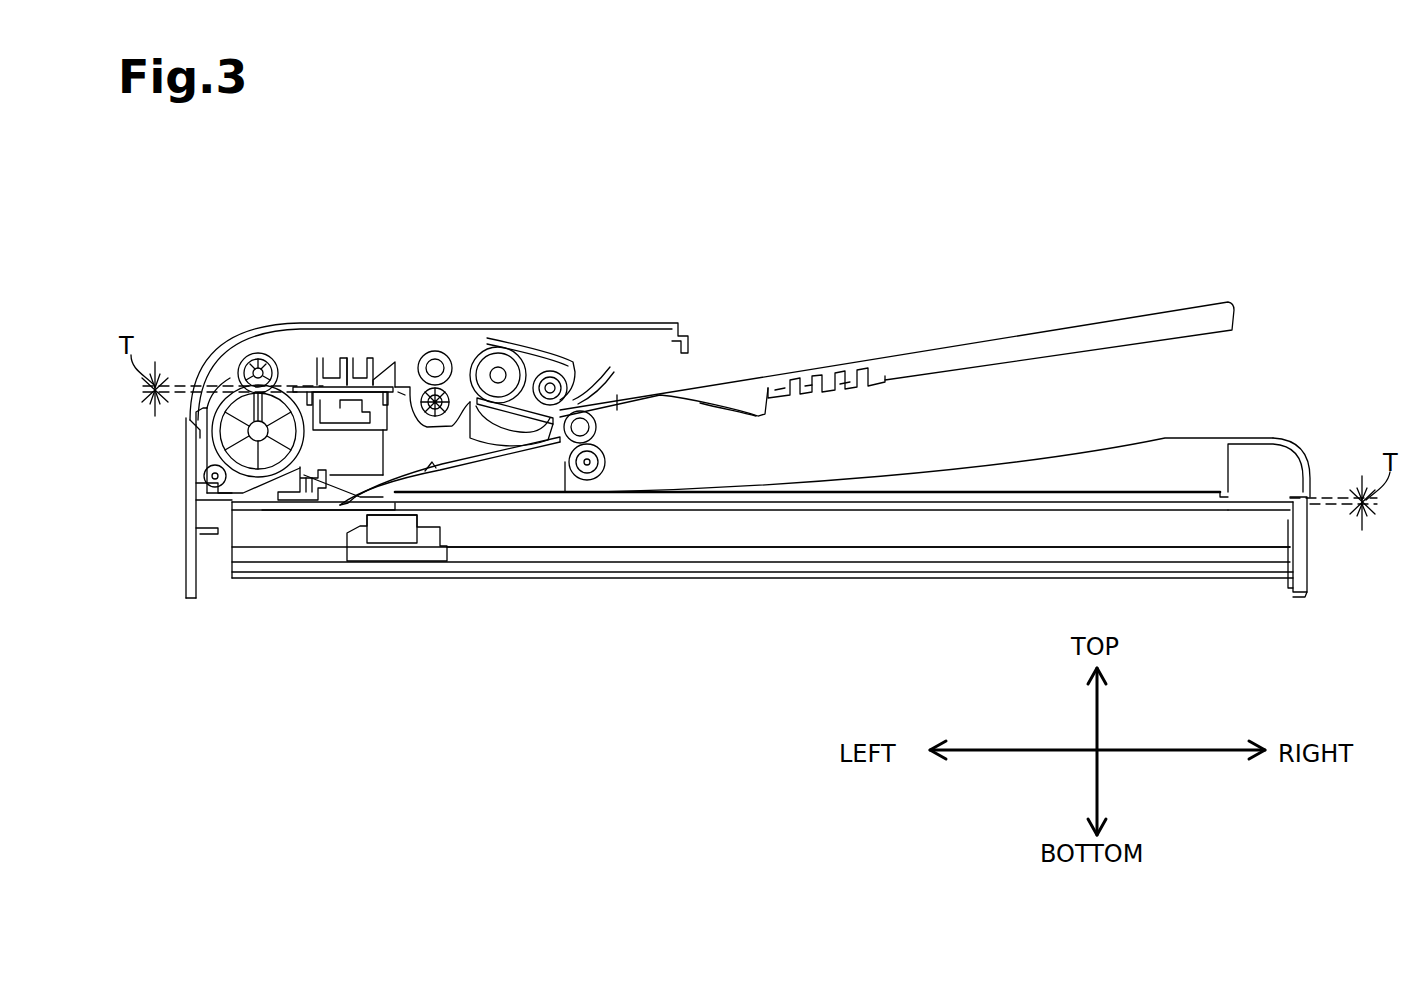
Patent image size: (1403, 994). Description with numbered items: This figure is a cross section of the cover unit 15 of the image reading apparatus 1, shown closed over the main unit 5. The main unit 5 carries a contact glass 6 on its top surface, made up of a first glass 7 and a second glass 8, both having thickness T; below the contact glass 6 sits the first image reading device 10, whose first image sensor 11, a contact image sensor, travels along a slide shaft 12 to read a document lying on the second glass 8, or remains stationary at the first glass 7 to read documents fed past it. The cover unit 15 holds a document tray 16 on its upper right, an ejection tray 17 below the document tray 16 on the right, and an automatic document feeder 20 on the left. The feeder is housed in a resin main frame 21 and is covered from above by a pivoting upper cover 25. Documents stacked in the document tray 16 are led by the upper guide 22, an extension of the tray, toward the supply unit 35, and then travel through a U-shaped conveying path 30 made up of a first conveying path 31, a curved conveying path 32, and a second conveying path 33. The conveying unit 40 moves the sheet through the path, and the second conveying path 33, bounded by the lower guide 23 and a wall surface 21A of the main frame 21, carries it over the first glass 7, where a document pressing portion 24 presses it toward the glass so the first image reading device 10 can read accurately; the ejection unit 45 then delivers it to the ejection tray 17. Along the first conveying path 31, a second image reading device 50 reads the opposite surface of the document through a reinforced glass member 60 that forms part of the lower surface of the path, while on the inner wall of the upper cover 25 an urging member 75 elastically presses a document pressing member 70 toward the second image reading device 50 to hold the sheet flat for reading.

The image reading apparatus 1 is at (243, 203).
The main unit 5 is at (1310, 576).
The contact glass 6 is at (1138, 516).
The first glass 7 is at (265, 510).
The second glass 8 is at (795, 512).
The first image reading device 10 is at (497, 622).
The first image sensor 11 is at (395, 532).
The slide shaft 12 is at (468, 556).
The cover unit 15 is at (1300, 453).
The document tray 16 is at (1092, 313).
The ejection tray 17 is at (1072, 432).
The automatic document feeder 20 is at (640, 310).
The main frame 21 is at (188, 457).
The wall surface 21A is at (495, 478).
The upper guide 22 is at (745, 388).
The lower guide 23 is at (545, 476).
The document pressing portion 24 is at (310, 500).
The upper cover 25 is at (222, 392).
The U-shaped conveying path 30 is at (603, 368).
The first conveying path 31 is at (400, 350).
The curved conveying path 32 is at (192, 424).
The second conveying path 33 is at (380, 522).
The supply unit 35 is at (528, 337).
The conveying unit 40 is at (255, 353).
The ejection unit 45 is at (606, 431).
The second image reading device 50 is at (303, 388).
The glass member 60 is at (388, 365).
The document pressing member 70 is at (345, 357).
The urging member 75 is at (318, 362).